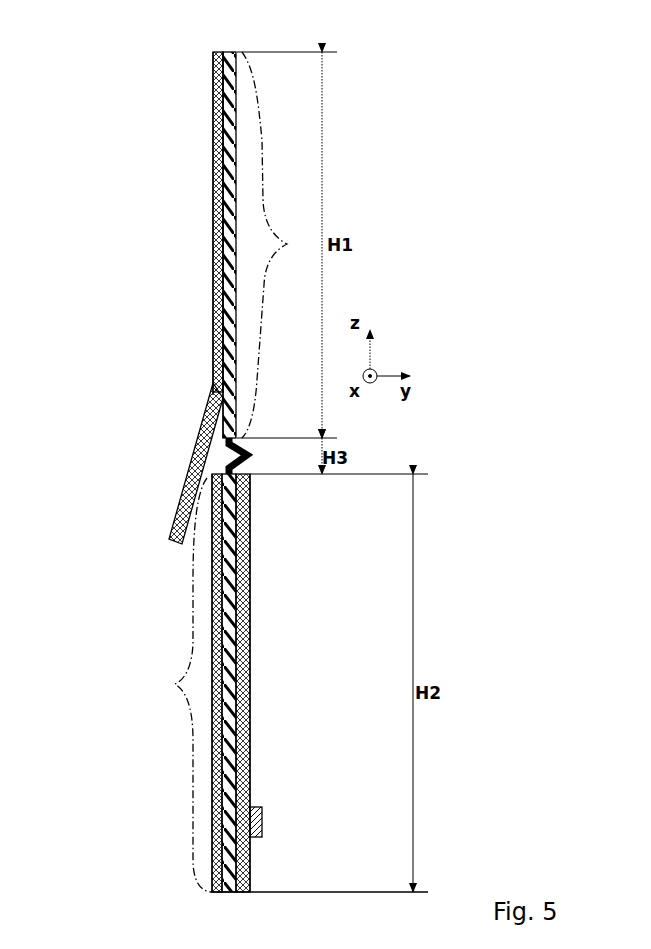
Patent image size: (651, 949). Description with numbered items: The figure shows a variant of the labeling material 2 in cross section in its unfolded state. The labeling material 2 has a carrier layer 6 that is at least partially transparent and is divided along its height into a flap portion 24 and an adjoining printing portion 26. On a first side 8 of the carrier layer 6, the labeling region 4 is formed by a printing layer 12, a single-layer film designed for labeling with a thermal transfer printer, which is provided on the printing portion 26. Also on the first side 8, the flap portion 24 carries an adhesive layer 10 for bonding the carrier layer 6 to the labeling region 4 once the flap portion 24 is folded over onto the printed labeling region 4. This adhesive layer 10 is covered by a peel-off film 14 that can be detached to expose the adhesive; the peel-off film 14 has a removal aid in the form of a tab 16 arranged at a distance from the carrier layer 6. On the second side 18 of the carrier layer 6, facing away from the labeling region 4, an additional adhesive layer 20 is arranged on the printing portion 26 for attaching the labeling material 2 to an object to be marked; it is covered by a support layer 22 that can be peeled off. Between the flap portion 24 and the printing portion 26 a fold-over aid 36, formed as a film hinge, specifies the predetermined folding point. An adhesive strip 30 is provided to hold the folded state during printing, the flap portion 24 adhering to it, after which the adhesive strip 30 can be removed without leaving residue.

The labeling material 2 is at (95, 87).
The labeling region 4 is at (212, 663).
The carrier layer 6 is at (232, 168).
The first side 8 is at (222, 192).
The adhesive layer 10 is at (215, 232).
The printing layer 12 is at (213, 812).
The peel-off film 14 is at (215, 296).
The tab 16 is at (193, 460).
The second side 18 is at (244, 627).
The additional adhesive layer 20 is at (250, 726).
The support layer 22 is at (250, 776).
The flap portion 24 is at (278, 245).
The printing portion 26 is at (175, 684).
The adhesive strip 30 is at (262, 824).
The fold-over aid 36 is at (250, 443).